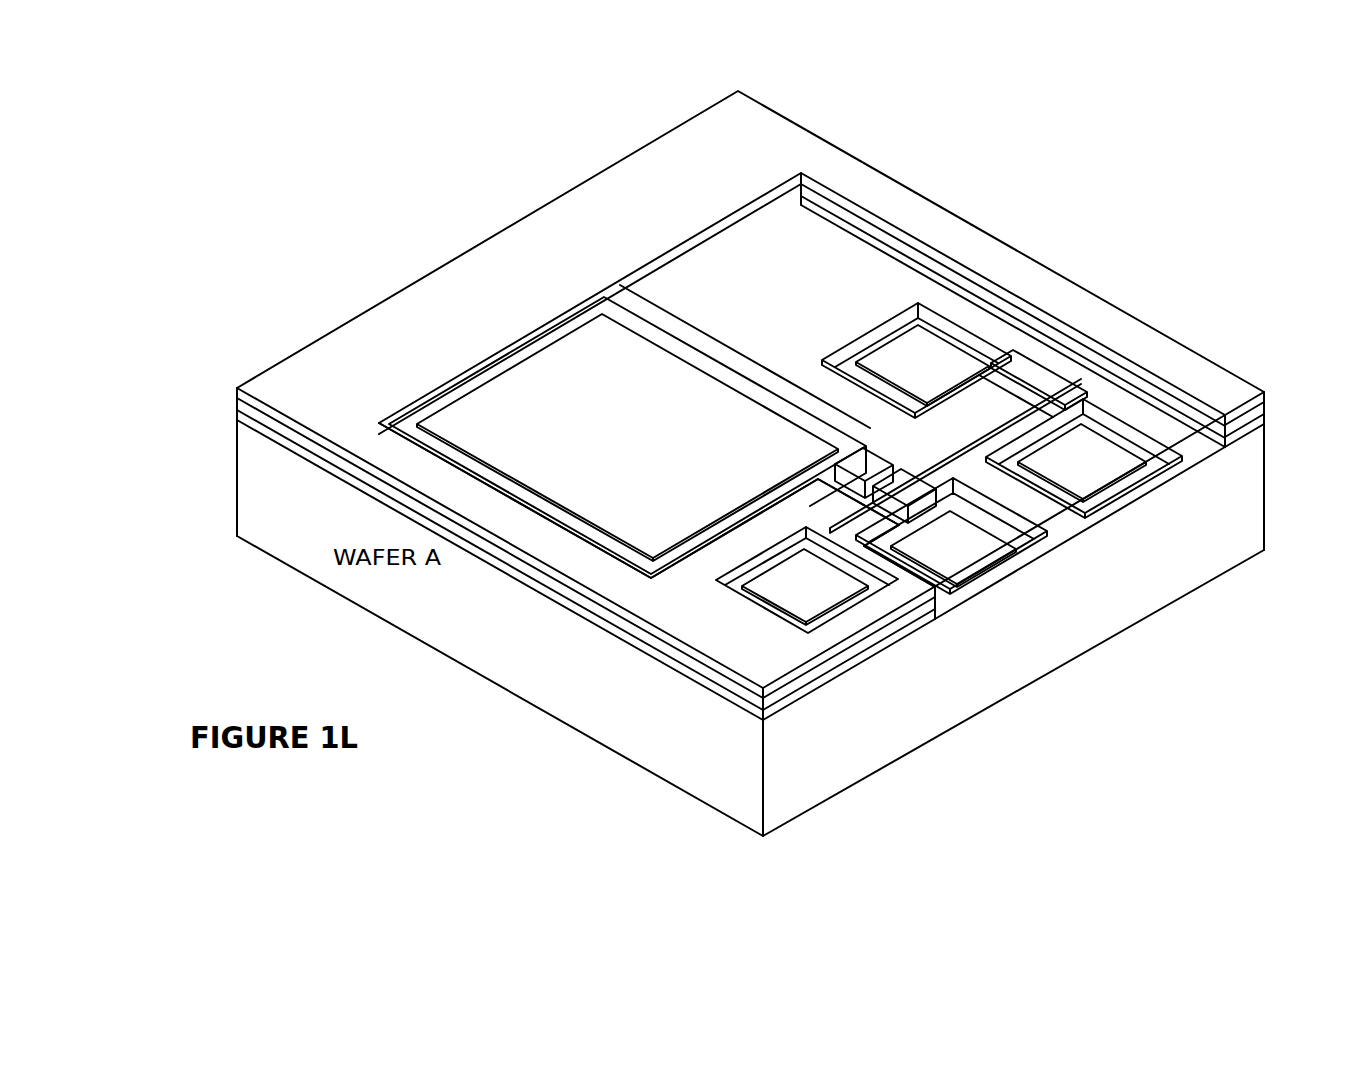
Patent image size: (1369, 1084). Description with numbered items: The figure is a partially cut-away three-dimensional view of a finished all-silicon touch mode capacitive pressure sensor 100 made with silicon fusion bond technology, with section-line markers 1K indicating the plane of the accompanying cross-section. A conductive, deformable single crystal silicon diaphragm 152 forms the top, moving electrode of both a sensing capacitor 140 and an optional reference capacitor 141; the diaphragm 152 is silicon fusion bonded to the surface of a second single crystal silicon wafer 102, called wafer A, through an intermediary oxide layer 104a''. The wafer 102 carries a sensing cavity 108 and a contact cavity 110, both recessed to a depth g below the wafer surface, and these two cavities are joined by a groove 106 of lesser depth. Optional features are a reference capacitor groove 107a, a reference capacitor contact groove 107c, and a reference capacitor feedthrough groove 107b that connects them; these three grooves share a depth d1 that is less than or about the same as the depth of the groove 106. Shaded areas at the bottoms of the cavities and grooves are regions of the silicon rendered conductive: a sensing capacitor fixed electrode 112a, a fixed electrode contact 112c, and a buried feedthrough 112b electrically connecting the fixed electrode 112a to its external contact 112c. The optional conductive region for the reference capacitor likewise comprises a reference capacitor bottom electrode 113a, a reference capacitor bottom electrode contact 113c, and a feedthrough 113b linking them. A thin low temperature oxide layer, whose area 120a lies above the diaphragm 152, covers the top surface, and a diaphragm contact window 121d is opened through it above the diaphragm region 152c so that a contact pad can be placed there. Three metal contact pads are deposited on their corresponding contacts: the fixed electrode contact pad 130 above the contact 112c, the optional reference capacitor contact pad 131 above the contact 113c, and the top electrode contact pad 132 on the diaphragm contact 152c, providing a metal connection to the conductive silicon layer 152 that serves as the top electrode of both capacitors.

The touch mode capacitive pressure sensor 100 is at (352, 250).
The second single crystal silicon wafer 102 is at (880, 730).
The intermediary oxide layer 104a'' is at (750, 577).
The groove 106 is at (878, 485).
The reference capacitor groove 107a is at (993, 353).
The reference capacitor feedthrough groove 107b is at (1083, 393).
The reference capacitor contact groove 107c is at (1150, 440).
The sensing cavity 108 is at (688, 322).
The contact cavity 110 is at (1030, 550).
The sensing capacitor fixed electrode 112a is at (630, 505).
The buried feedthrough 112b is at (885, 480).
The fixed electrode contact 112c is at (1030, 526).
The reference capacitor bottom electrode 113a is at (903, 352).
The feedthrough 113b is at (1050, 370).
The reference capacitor bottom electrode contact 113c is at (1040, 405).
The low temperature oxide layer area above diaphragm 120a is at (832, 650).
The diaphragm contact window 121d is at (745, 555).
The fixed electrode contact pad 130 is at (973, 553).
The reference capacitor contact pad 131 is at (1105, 470).
The top electrode contact pad 132 is at (825, 590).
The sensing capacitor 140 is at (525, 390).
The reference capacitor 141 is at (974, 280).
The single crystal silicon diaphragm 152 is at (803, 683).
The diaphragm contact 152c is at (775, 600).
The section line 1K is at (437, 232).
The cavity depth g is at (762, 418).
The groove depth d1 is at (1027, 420).